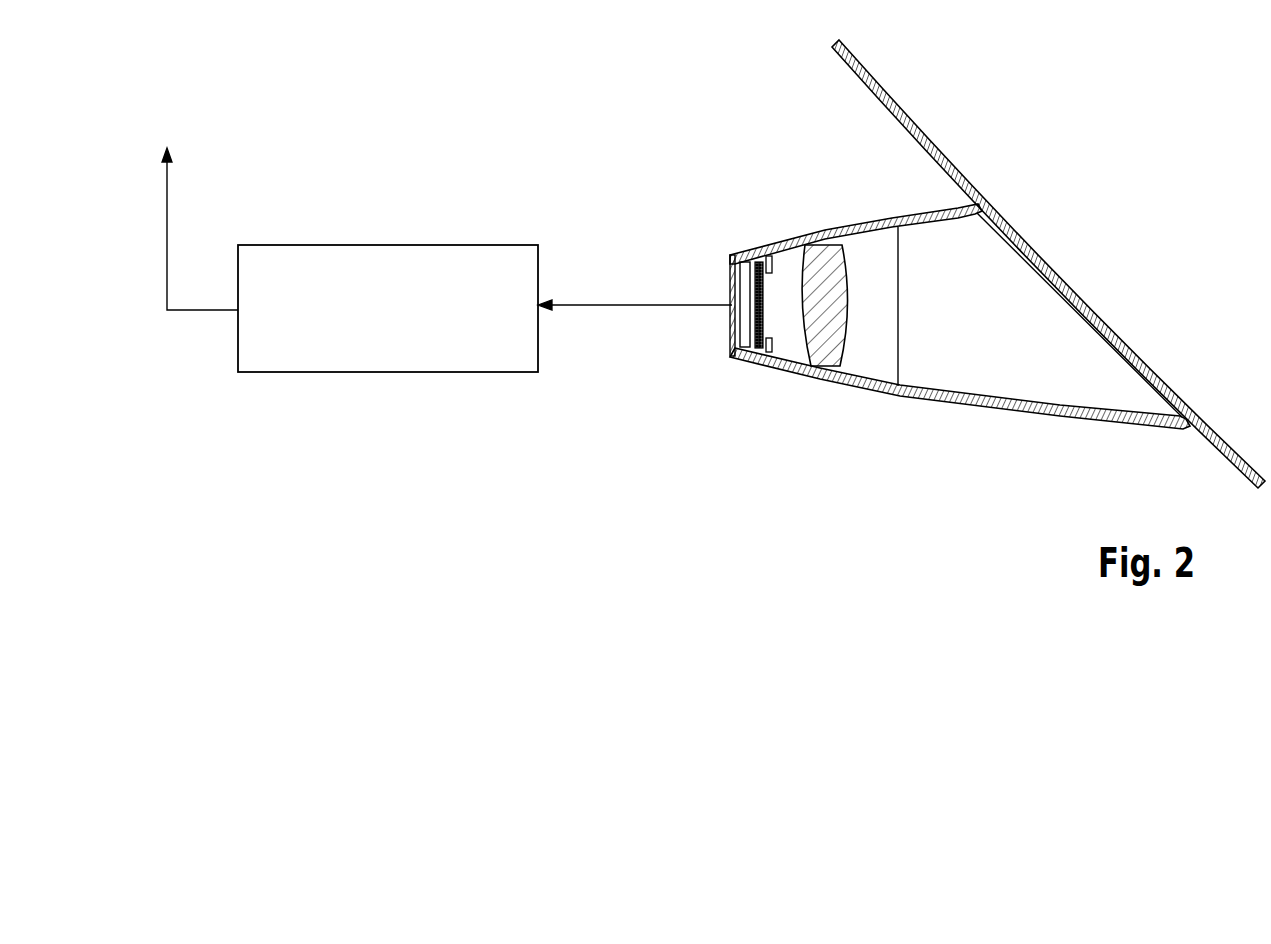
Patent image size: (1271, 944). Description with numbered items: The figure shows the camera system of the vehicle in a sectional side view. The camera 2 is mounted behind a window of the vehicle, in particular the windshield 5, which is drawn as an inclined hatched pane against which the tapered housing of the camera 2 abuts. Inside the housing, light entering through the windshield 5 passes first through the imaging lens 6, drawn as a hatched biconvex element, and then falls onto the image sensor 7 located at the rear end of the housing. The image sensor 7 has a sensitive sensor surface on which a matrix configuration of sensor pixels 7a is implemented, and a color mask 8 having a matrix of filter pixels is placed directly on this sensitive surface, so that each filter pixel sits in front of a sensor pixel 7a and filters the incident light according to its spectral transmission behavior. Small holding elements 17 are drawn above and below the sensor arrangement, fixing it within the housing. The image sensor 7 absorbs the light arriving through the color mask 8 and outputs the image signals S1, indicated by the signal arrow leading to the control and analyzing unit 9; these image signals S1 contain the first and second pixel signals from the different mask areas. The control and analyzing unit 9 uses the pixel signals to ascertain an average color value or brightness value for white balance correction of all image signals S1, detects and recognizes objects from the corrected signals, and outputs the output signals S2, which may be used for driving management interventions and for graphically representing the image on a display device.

The camera 2 is at (719, 432).
The windshield 5 is at (900, 99).
The imaging lens 6 is at (825, 277).
The image sensor 7 is at (748, 276).
The sensor pixels 7a is at (755, 320).
The color mask 8 is at (763, 300).
The control and analyzing unit 9 is at (397, 275).
The holder 17 is at (774, 262).
The image signals S1 is at (634, 300).
The output signals S2 is at (168, 194).